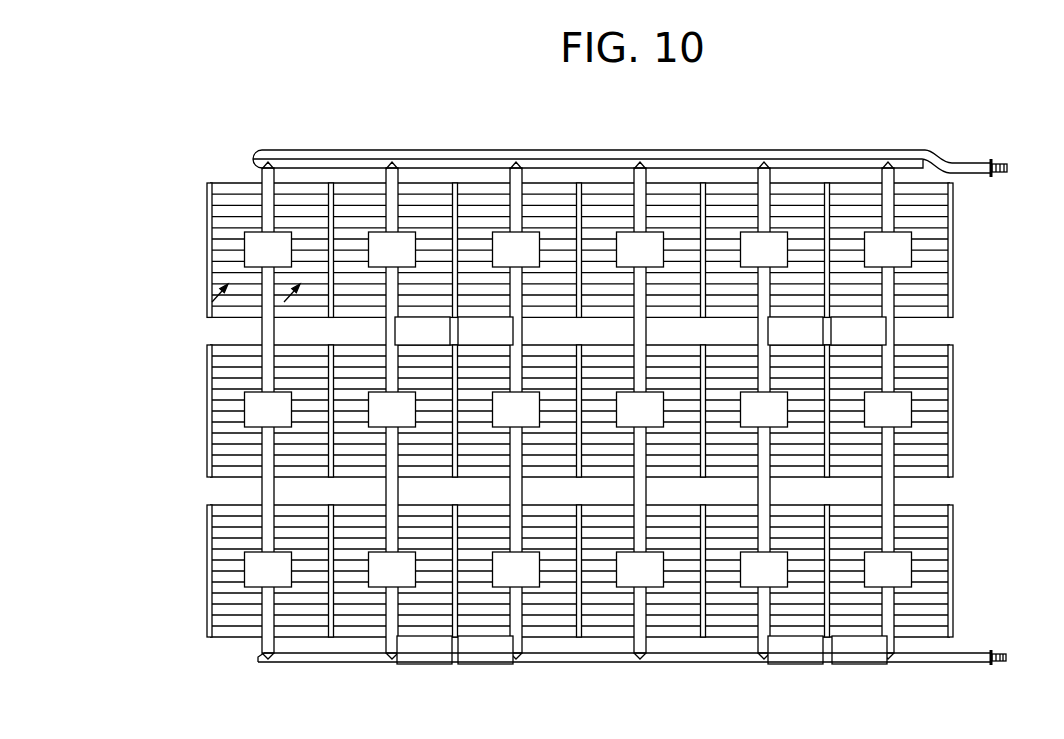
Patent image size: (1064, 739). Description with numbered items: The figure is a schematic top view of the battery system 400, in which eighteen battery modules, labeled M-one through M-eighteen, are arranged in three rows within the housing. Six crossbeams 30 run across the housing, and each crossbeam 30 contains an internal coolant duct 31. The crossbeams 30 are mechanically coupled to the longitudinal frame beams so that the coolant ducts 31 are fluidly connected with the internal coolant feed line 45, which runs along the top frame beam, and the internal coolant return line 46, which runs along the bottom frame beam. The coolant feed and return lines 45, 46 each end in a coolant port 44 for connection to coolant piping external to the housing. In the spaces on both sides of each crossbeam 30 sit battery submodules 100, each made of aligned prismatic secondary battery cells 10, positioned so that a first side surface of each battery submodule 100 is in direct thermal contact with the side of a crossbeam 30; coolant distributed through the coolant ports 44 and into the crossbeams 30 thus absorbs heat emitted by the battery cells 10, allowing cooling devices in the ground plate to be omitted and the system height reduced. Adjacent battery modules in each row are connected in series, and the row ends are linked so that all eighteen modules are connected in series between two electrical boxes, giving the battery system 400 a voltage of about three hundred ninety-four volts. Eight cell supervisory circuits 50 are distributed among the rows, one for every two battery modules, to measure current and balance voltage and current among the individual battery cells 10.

The secondary battery cell 10 is at (212, 189).
The battery submodule 100 is at (284, 300).
The crossbeam 30 is at (569, 435).
The internal coolant duct 31 is at (268, 663).
The coolant port 44 is at (1008, 168).
The internal coolant feed line 45 is at (613, 150).
The internal coolant return line 46 is at (603, 665).
The cell supervisory circuit 50 is at (862, 318).
The battery system 400 is at (603, 406).